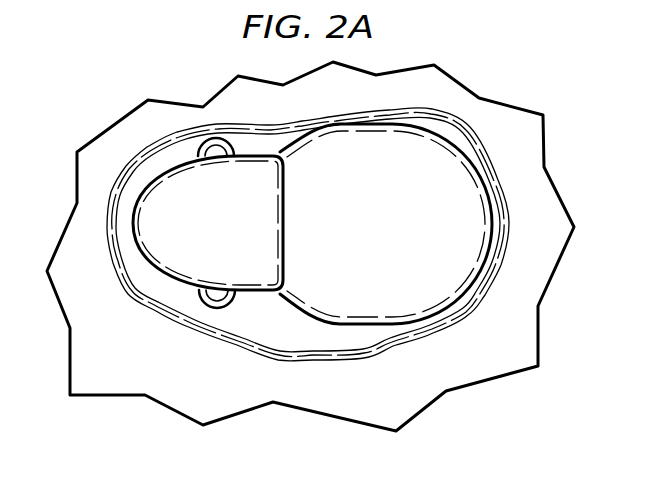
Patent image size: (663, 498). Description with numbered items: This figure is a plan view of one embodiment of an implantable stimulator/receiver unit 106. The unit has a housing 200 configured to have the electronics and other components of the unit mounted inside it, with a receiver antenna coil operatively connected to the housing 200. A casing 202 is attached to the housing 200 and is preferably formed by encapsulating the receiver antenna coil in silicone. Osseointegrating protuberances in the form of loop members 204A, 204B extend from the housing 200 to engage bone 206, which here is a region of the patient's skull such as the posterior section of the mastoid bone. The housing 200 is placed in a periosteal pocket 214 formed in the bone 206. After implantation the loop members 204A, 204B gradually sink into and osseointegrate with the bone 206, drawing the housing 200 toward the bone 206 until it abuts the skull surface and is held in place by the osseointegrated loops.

The stimulator/receiver unit 106 is at (541, 85).
The housing 200 is at (155, 266).
The casing 202 is at (309, 309).
The loop member 204A is at (203, 141).
The loop member 204B is at (203, 308).
The bone 206 is at (83, 366).
The periosteal pocket 214 is at (428, 123).